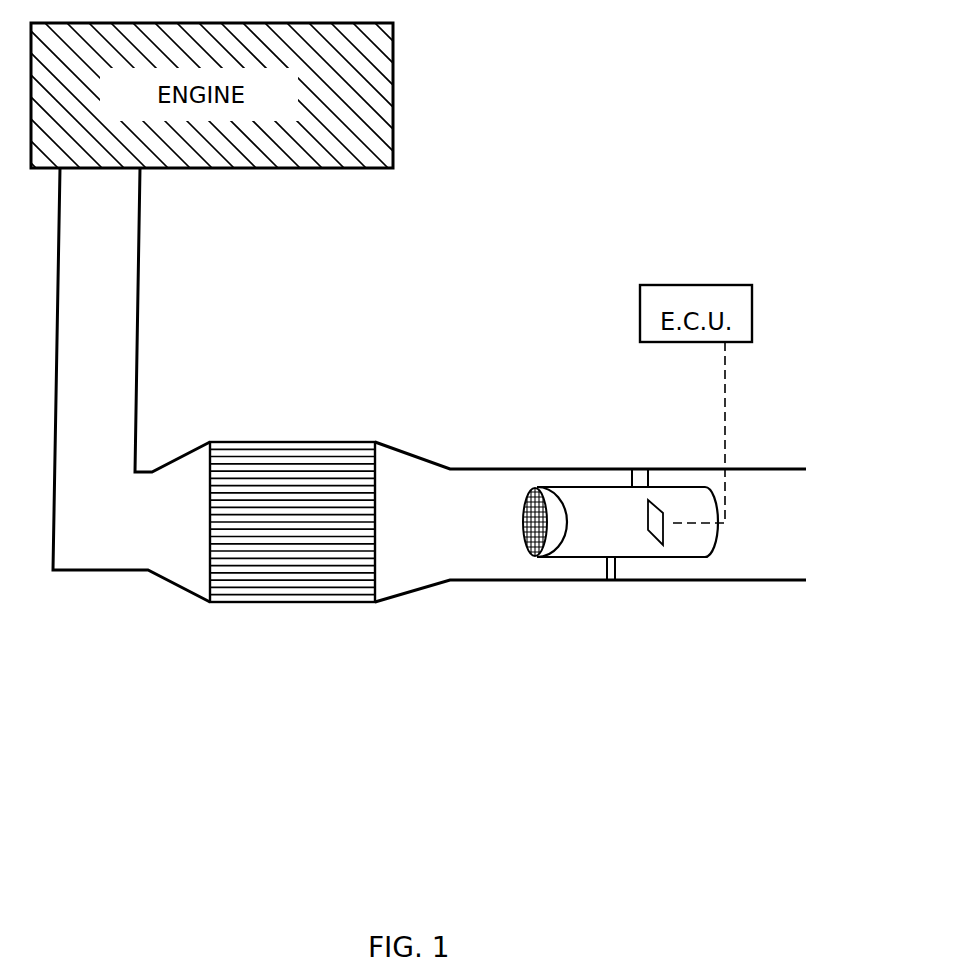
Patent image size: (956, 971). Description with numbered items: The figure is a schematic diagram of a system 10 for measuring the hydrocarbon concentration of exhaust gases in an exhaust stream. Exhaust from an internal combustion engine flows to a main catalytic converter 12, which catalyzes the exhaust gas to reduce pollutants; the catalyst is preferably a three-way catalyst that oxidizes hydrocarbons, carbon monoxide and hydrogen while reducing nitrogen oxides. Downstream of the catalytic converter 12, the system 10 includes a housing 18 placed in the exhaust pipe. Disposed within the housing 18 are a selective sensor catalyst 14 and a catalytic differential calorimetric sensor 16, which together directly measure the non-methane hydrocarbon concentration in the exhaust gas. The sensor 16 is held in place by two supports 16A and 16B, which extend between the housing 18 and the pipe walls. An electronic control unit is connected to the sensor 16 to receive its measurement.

The system for measuring hydrocarbon concentration 10 is at (753, 459).
The main catalytic converter 12 is at (342, 462).
The sensor catalyst 14 is at (550, 548).
The catalytic differential calorimetric sensor 16 is at (650, 500).
The support 16A is at (630, 472).
The support 16B is at (615, 565).
The housing 18 is at (583, 547).